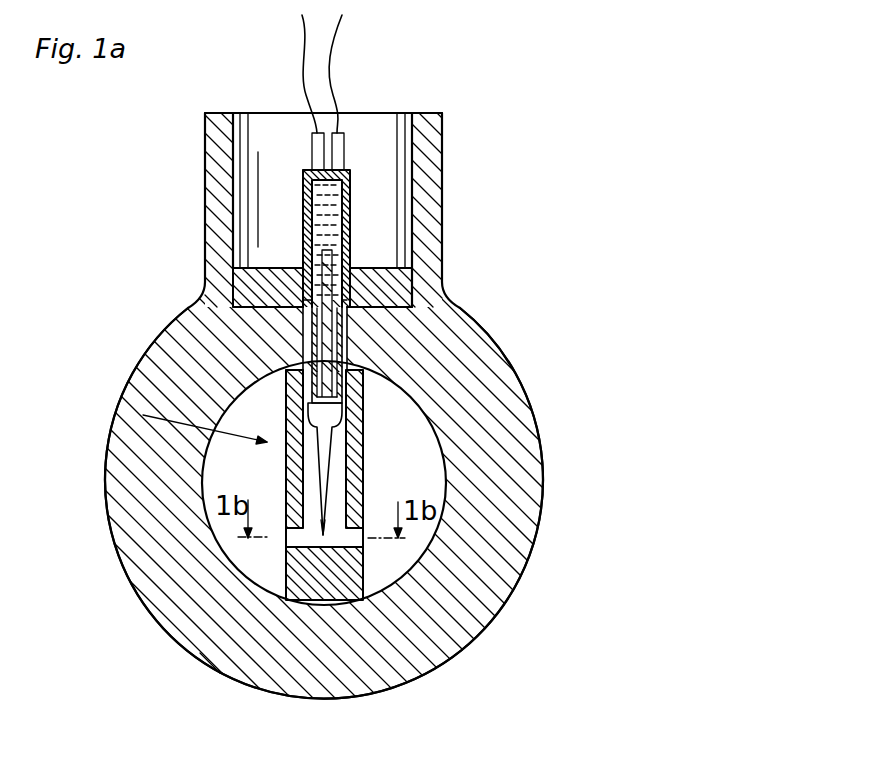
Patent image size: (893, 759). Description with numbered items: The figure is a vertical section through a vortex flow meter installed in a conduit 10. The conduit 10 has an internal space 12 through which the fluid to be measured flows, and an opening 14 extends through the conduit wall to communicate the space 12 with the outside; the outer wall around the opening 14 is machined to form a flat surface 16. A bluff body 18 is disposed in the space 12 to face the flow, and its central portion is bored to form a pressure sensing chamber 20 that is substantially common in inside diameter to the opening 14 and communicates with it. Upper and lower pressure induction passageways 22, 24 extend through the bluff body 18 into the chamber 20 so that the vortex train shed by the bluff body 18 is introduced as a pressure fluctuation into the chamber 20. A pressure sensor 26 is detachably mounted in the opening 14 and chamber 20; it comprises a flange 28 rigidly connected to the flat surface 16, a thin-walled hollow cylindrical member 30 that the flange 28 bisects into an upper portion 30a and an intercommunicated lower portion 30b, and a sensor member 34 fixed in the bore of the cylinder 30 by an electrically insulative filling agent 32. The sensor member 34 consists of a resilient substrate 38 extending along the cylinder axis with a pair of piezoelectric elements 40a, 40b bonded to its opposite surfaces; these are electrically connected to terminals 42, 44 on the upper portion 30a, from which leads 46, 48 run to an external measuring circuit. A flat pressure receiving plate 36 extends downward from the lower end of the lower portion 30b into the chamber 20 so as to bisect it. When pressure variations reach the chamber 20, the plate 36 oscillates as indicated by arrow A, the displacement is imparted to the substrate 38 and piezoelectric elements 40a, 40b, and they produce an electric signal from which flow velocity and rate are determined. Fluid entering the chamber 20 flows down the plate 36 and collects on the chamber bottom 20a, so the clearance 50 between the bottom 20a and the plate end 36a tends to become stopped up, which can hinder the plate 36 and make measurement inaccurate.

The conduit 10 is at (178, 582).
The space 12 is at (220, 473).
The opening 14 is at (297, 330).
The flat surface 16 is at (283, 303).
The bluff body 18 is at (106, 424).
The pressure sensing chamber 20 is at (363, 440).
The bottom of the chamber 20a is at (330, 545).
The pressure induction passageway 22 is at (297, 368).
The pressure induction passageway 24 is at (210, 663).
The pressure sensor 26 is at (385, 257).
The flange 28 is at (268, 285).
The hollow cylindrical member 30 is at (356, 196).
The upper portion of cylindrical member 30a is at (303, 190).
The lower portion of cylindrical member 30b is at (340, 372).
The filling agent 32 is at (340, 227).
The sensor member 34 is at (348, 300).
The pressure receiving plate 36 is at (327, 478).
The plate end 36a is at (336, 523).
The resilient substrate 38 is at (345, 324).
The piezoelectric element 40a is at (310, 345).
The piezoelectric element 40b is at (342, 341).
The terminal 42 is at (397, 147).
The terminal 44 is at (320, 142).
The lead 46 is at (337, 68).
The lead 48 is at (302, 70).
The clearance 50 is at (297, 540).
The arrow A is at (309, 524).